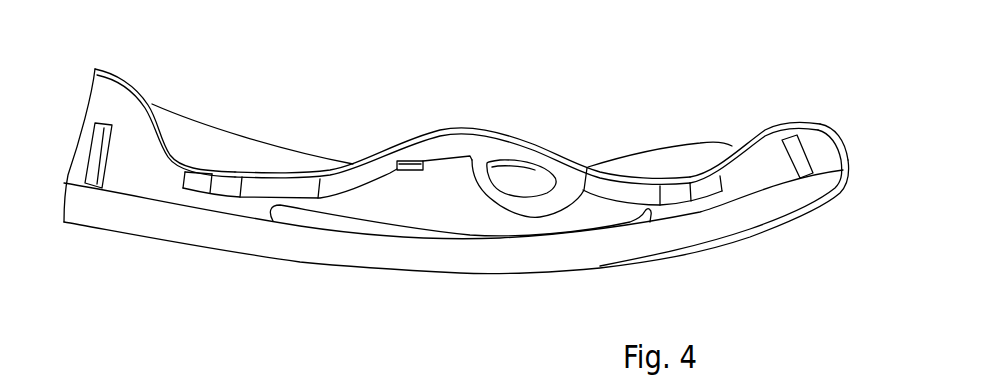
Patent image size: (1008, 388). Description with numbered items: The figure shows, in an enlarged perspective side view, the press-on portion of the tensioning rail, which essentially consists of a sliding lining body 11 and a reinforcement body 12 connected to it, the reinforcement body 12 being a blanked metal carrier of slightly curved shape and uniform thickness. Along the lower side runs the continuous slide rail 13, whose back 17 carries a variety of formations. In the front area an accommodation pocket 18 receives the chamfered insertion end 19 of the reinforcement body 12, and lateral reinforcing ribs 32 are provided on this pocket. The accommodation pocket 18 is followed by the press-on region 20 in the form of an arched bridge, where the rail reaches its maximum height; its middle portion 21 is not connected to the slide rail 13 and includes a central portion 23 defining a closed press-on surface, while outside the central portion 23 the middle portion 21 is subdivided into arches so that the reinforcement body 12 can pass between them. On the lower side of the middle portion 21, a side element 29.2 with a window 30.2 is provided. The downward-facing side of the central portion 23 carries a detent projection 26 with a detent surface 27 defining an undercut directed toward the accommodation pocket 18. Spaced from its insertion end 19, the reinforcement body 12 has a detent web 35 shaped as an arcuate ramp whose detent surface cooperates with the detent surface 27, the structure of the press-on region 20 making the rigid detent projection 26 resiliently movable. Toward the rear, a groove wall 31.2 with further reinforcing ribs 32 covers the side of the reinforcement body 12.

The sliding lining body 11 is at (146, 244).
The reinforcement body 12 is at (223, 143).
The slide rail 13 is at (712, 231).
The back of the slide rail 17 is at (741, 202).
The accommodation pocket 18 is at (840, 125).
The insertion end 19 is at (722, 142).
The press-on region 20 is at (483, 120).
The middle portion 21 is at (573, 146).
The central portion 23 is at (524, 129).
The detent projection 26 is at (418, 157).
The detent surface 27 is at (416, 160).
The side element 29.2 is at (484, 194).
The window 30.2 is at (530, 182).
The groove wall 31.2 is at (129, 82).
The reinforcing rib 32 is at (90, 181).
The detent web 35 is at (450, 165).